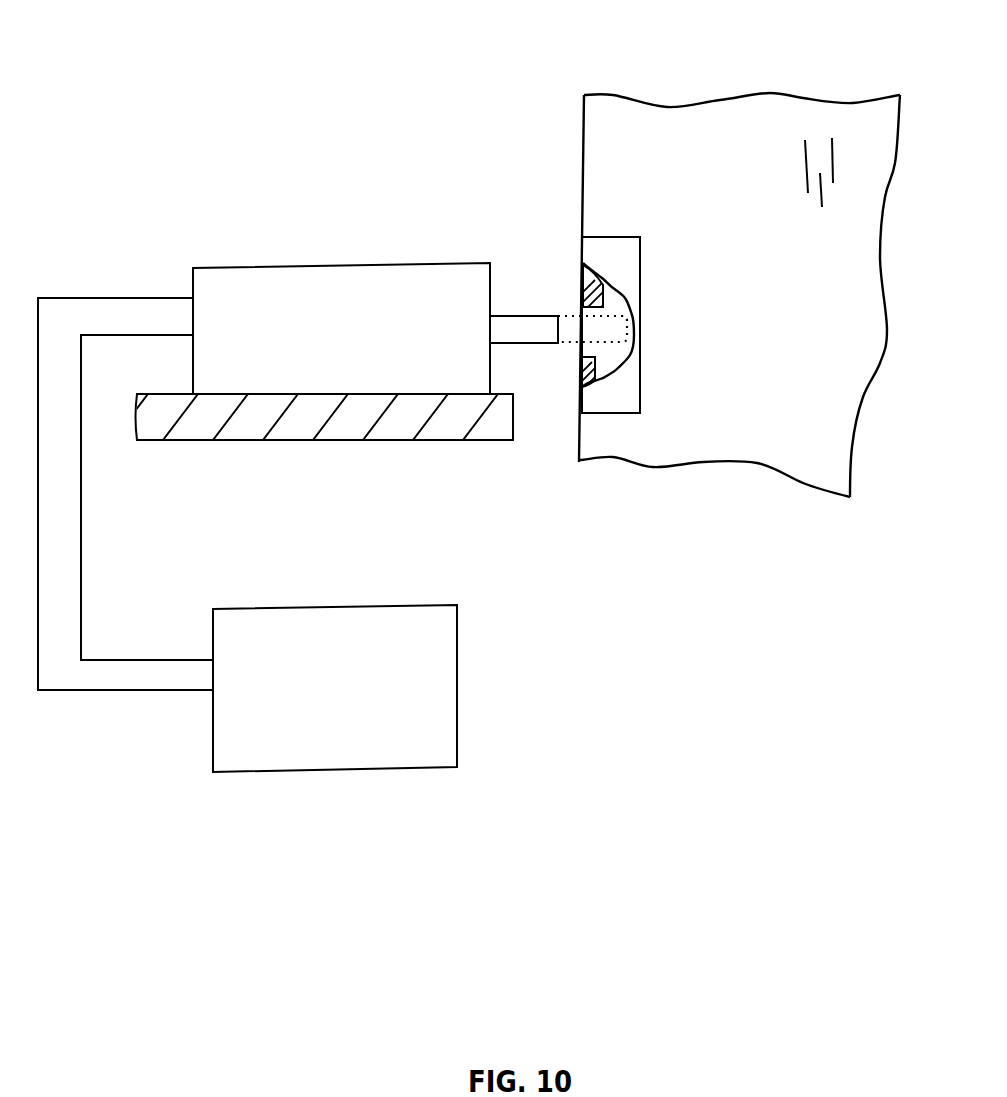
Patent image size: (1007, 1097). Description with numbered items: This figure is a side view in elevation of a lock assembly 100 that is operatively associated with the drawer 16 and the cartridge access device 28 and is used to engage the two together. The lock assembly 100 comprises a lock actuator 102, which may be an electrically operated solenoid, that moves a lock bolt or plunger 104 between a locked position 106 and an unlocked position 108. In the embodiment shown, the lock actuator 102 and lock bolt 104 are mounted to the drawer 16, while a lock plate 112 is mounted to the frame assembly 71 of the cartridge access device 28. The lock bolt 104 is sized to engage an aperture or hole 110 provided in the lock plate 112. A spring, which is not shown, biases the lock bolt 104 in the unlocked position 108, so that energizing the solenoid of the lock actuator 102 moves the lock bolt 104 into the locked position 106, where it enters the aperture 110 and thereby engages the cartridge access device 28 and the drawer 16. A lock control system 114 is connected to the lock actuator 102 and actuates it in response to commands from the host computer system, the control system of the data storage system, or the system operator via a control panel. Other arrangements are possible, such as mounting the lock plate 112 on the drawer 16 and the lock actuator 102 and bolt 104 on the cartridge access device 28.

The lock assembly 100 is at (260, 93).
The cartridge access device 28 is at (583, 160).
The frame assembly 71 is at (772, 302).
The lock actuator 102 is at (345, 266).
The lock bolt 104 is at (530, 345).
The locked position 106 is at (634, 336).
The unlocked position 108 is at (521, 315).
The aperture 110 is at (582, 308).
The lock plate 112 is at (641, 288).
The drawer 16 is at (330, 442).
The lock control system 114 is at (335, 770).